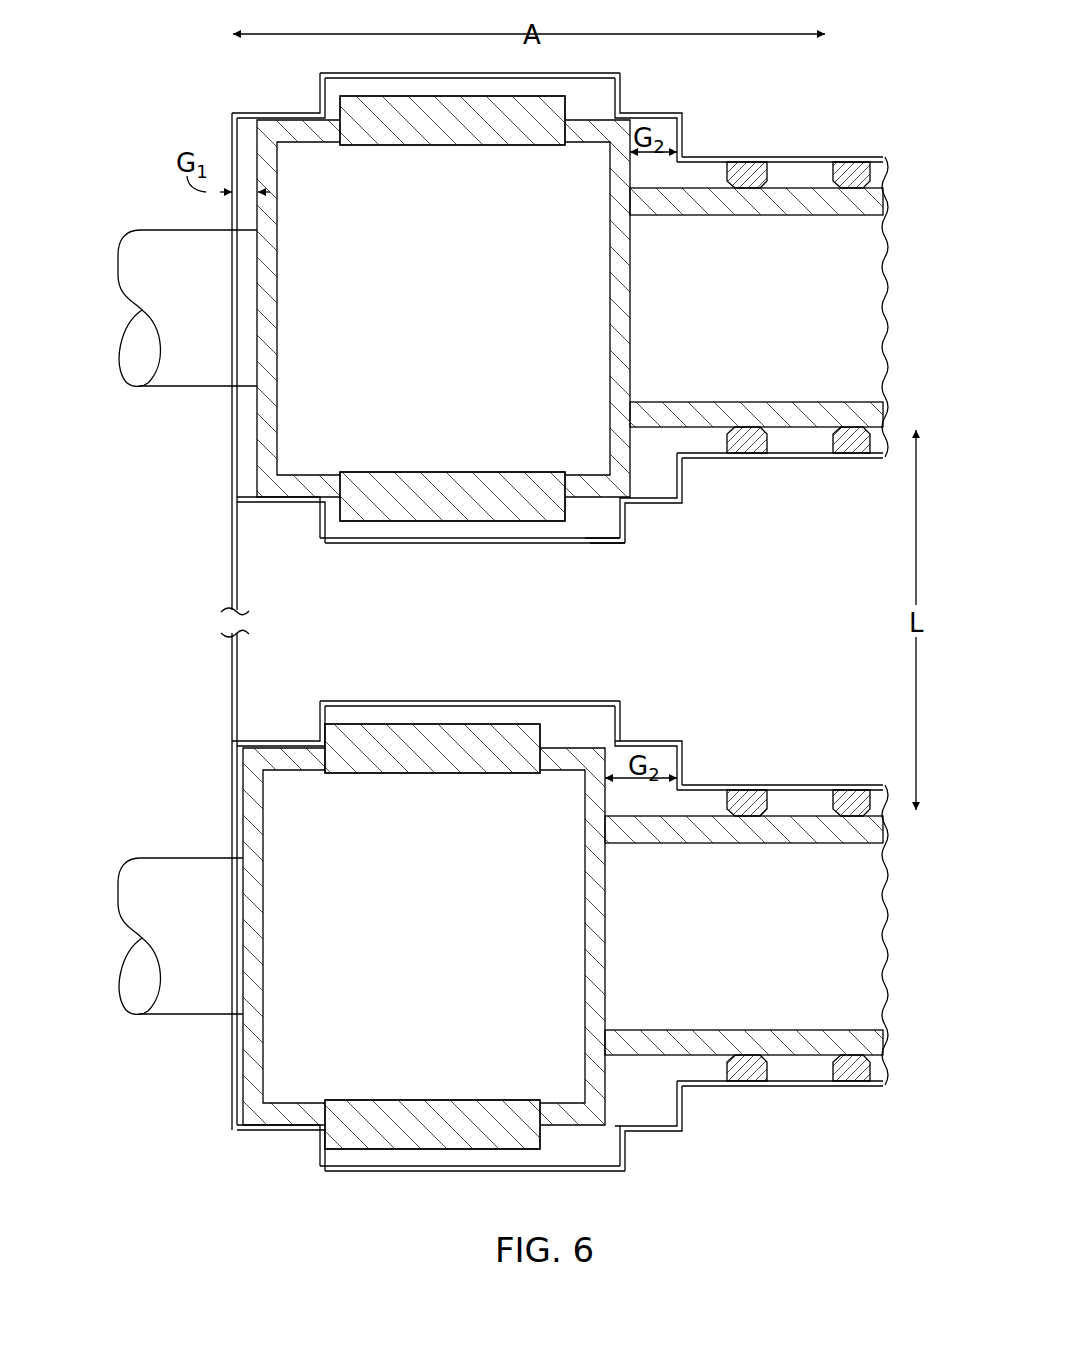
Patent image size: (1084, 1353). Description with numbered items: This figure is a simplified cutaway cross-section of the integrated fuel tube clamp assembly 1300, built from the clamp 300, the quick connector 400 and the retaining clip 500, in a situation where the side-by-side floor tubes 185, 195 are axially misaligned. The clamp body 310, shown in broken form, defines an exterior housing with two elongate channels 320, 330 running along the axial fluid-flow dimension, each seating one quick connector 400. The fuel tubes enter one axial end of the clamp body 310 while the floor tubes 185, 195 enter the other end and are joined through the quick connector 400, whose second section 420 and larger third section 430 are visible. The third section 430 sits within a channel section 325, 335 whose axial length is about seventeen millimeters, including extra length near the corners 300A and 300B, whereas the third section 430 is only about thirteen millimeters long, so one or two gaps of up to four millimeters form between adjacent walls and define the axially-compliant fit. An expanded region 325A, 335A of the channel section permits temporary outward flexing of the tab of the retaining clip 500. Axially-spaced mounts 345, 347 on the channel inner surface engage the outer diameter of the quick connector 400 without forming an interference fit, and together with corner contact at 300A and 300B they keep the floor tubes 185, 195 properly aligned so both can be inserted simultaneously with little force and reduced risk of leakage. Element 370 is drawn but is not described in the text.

The integrated fuel tube clamp assembly 1300 is at (199, 54).
The clamp 300 is at (511, 654).
The corner 300A is at (283, 110).
The corner 300B is at (627, 108).
The clamp body 310 is at (355, 545).
The channel 320 is at (793, 1086).
The channel section 325 is at (240, 445).
The expanded region 325A is at (614, 708).
The channel 330 is at (793, 458).
The channel section 335 is at (237, 790).
The expanded region 335A is at (592, 543).
The axially-spaced mount 345 is at (853, 162).
The axially-spaced mount 347 is at (748, 162).
The housing 370 is at (245, 945).
The quick connector 400 is at (262, 279).
The second section 420 is at (798, 322).
The third section 430 is at (478, 322).
The retaining clip 500 is at (443, 521).
The floor tube 185 is at (178, 387).
The floor tube 195 is at (178, 1015).